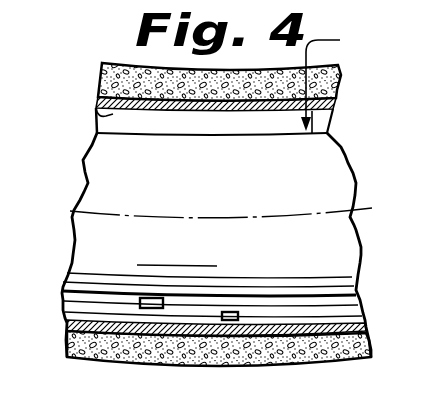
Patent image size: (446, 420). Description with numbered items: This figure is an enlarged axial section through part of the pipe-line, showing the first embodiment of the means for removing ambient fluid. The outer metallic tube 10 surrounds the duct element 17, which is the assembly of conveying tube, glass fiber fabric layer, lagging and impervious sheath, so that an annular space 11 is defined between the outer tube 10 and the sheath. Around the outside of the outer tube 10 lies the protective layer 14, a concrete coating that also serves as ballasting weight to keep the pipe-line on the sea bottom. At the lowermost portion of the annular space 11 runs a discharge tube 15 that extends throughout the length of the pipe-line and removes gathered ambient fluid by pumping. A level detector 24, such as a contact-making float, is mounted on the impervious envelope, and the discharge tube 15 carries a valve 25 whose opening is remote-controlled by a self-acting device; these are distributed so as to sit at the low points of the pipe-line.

The outer tube 10 is at (95, 108).
The annular space 11 is at (330, 116).
The protective layer 14 is at (100, 78).
The discharge tube 15 is at (293, 320).
The duct element 17 is at (331, 77).
The level detector 24 is at (137, 298).
The valve 25 is at (226, 312).